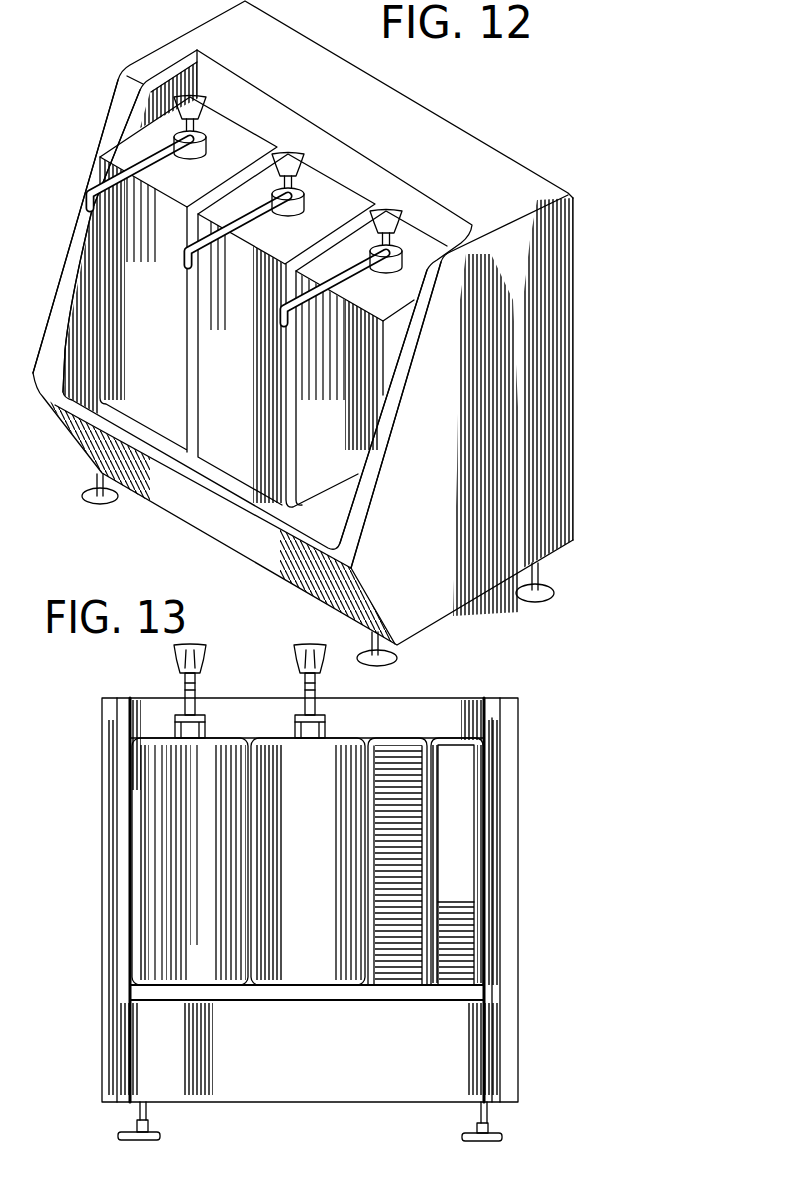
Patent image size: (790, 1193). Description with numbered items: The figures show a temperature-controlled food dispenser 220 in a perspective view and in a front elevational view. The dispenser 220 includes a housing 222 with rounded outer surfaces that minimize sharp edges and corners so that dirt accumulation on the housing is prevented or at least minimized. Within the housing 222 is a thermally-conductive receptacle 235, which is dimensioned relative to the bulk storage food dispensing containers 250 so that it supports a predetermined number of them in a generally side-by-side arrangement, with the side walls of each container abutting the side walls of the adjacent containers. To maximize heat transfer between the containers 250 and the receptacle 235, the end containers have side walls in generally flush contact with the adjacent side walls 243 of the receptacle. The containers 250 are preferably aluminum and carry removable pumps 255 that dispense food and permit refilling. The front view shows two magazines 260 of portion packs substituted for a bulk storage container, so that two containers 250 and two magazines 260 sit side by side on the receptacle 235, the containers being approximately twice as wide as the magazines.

In FIG. 12, the food dispenser 220 is at (578, 268).
In FIG. 13, the food dispenser 220 is at (522, 839).
In FIG. 12, the housing 222 is at (548, 467).
In FIG. 12, the thermally-conductive receptacle 235 is at (366, 150).
In FIG. 13, the thermally-conductive receptacle 235 is at (415, 722).
In FIG. 12, the side walls 243 is at (153, 112).
In FIG. 13, the side walls 243 is at (125, 822).
In FIG. 12, the bulk storage food dispensing containers 250 is at (117, 238).
In FIG. 13, the bulk storage food dispensing containers 250 is at (172, 808).
In FIG. 12, the removable pumps 255 is at (212, 130).
In FIG. 13, the removable pumps 255 is at (173, 725).
In FIG. 13, the magazines 260 is at (462, 753).